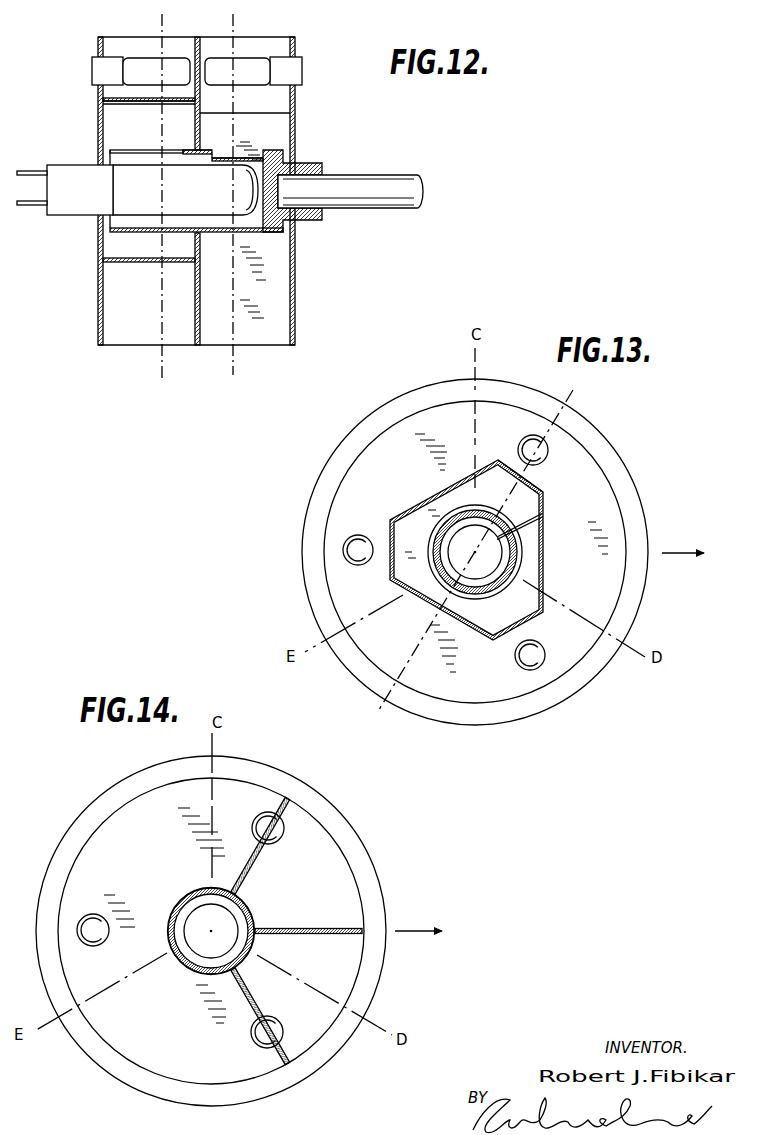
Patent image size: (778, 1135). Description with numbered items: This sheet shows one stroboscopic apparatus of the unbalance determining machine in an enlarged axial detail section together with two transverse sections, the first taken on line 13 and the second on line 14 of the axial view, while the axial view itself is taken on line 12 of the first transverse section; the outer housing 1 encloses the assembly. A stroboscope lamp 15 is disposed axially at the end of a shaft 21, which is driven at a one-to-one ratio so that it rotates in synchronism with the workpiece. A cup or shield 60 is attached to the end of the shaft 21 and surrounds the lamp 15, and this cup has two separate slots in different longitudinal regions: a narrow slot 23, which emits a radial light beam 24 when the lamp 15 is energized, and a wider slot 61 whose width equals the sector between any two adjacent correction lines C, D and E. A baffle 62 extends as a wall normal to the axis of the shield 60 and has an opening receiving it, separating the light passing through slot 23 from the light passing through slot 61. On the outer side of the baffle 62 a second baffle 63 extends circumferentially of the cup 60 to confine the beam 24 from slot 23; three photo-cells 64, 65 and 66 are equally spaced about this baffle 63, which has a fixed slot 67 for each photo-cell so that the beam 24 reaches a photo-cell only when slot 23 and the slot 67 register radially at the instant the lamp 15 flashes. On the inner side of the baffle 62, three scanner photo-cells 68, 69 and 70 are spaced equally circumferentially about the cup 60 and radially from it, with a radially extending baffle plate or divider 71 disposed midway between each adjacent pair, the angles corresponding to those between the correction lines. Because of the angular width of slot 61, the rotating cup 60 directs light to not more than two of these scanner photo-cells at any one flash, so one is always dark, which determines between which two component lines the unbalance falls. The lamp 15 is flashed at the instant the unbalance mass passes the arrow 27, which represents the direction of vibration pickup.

In FIG. 13, the housing 1 is at (318, 481).
In FIG. 14, the housing 1 is at (73, 823).
In FIG. 13, the section line 12- 12 is at (584, 396).
In FIG. 12, the section line 13- 13 is at (161, 23).
In FIG. 12, the section line 14- 14 is at (232, 23).
In FIG. 12, the stroboscope lamp 15 is at (143, 204).
In FIG. 13, the stroboscope lamp 15 is at (485, 569).
In FIG. 14, the stroboscope lamp 15 is at (225, 925).
In FIG. 12, the shaft 21 is at (384, 175).
In FIG. 12, the slot 23 is at (137, 150).
In FIG. 13, the slot 23 is at (518, 522).
In FIG. 13, the radial light beam 24 is at (545, 530).
In FIG. 13, the arrow 27 is at (683, 542).
In FIG. 14, the arrow 27 is at (419, 919).
In FIG. 12, the cup or shield 60 is at (166, 233).
In FIG. 13, the cup or shield 60 is at (438, 540).
In FIG. 14, the cup or shield 60 is at (178, 912).
In FIG. 12, the slot 61 is at (247, 157).
In FIG. 14, the slot 61 is at (232, 899).
In FIG. 12, the baffle 62 is at (201, 141).
In FIG. 13, the baffle 62 is at (372, 452).
In FIG. 12, the second baffle 63 is at (104, 103).
In FIG. 13, the second baffle 63 is at (498, 460).
In FIG. 12, the photo-cell 64 is at (140, 63).
In FIG. 13, the photo-cell 64 is at (548, 450).
In FIG. 13, the photo-cell 65 is at (358, 567).
In FIG. 13, the photo-cell 66 is at (545, 650).
In FIG. 12, the fixed slot 67 is at (173, 101).
In FIG. 13, the fixed slot 67 is at (388, 548).
In FIG. 14, the scanner photo-cell 68 is at (93, 946).
In FIG. 14, the scanner photo-cell 69 is at (279, 1018).
In FIG. 12, the scanner photo-cell 70 is at (255, 60).
In FIG. 14, the scanner photo-cell 70 is at (284, 831).
In FIG. 12, the baffle plate or divider 71 is at (284, 137).
In FIG. 14, the baffle plate or divider 71 is at (151, 839).